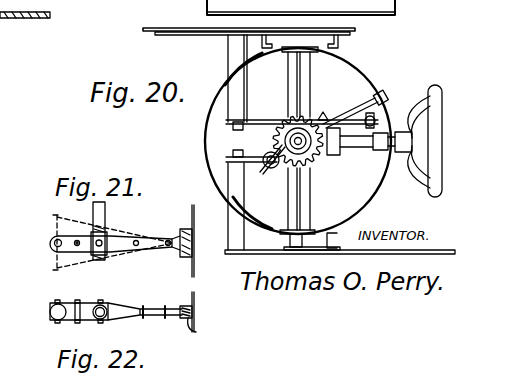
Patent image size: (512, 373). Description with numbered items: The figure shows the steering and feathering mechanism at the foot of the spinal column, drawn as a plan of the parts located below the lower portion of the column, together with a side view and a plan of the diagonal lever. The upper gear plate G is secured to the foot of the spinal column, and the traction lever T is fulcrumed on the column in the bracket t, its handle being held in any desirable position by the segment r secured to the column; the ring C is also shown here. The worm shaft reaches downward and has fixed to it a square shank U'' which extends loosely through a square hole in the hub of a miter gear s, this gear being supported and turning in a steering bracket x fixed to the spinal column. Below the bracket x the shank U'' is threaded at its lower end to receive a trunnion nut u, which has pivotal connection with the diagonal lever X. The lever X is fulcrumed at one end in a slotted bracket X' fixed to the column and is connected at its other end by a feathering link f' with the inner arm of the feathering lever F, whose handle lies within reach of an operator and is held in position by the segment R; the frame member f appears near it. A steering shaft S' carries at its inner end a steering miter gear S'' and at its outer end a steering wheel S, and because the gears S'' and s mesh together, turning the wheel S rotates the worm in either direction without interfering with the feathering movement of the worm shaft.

In FIG. 20, the upper gear plate G is at (36, 18).
In FIG. 20, the traction lever T is at (166, 27).
In FIG. 20, the segment r is at (346, 33).
In FIG. 20, the ring C is at (372, 201).
In FIG. 20, the bracket t is at (252, 80).
In FIG. 20, the frame post f is at (251, 200).
In FIG. 20, the steering bracket x is at (312, 87).
In FIG. 20, the steering miter gear S'' is at (309, 148).
In FIG. 20, the miter gear s is at (271, 141).
In FIG. 20, the steering shaft S' is at (367, 156).
In FIG. 20, the steering wheel S is at (428, 141).
In FIG. 20, the diagonal lever X is at (348, 110).
In FIG. 21, the diagonal lever X is at (111, 245).
In FIG. 22, the diagonal lever X is at (116, 305).
In FIG. 20, the slotted bracket X' is at (388, 87).
In FIG. 21, the slotted bracket X' is at (177, 241).
In FIG. 22, the slotted bracket X' is at (196, 318).
In FIG. 20, the feathering lever F is at (452, 252).
In FIG. 20, the segment R is at (355, 252).
In FIG. 21, the square shank U'' is at (109, 230).
In FIG. 21, the trunnion nut u is at (96, 254).
In FIG. 22, the trunnion nut u is at (100, 304).
In FIG. 22, the feathering link f' is at (44, 313).